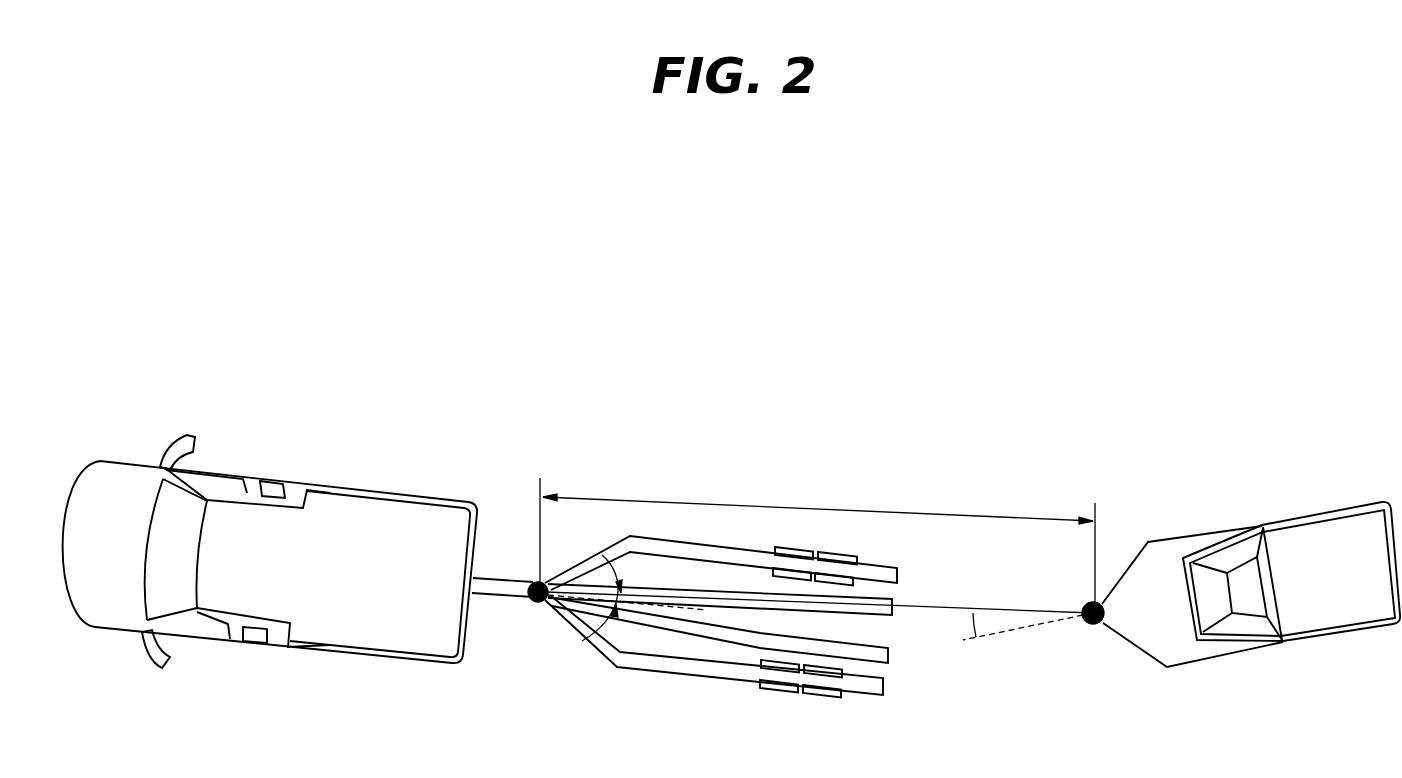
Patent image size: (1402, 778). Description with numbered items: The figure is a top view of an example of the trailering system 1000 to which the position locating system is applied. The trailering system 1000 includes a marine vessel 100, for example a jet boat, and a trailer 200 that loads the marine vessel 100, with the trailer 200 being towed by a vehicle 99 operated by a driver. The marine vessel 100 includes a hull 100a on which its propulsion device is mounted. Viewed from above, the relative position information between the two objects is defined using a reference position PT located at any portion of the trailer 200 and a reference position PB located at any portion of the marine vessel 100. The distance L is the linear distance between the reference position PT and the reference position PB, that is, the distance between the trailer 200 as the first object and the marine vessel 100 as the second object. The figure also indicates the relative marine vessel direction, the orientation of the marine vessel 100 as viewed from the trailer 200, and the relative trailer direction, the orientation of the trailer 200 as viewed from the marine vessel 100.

The trailering system 1000 is at (912, 299).
The vehicle 99 is at (232, 460).
The marine vessel 100 is at (1333, 498).
The hull 100a is at (1153, 540).
The trailer 200 is at (652, 683).
The reference position on trailer PT is at (531, 610).
The reference position on marine vessel PB is at (1093, 628).
The distance L is at (817, 540).